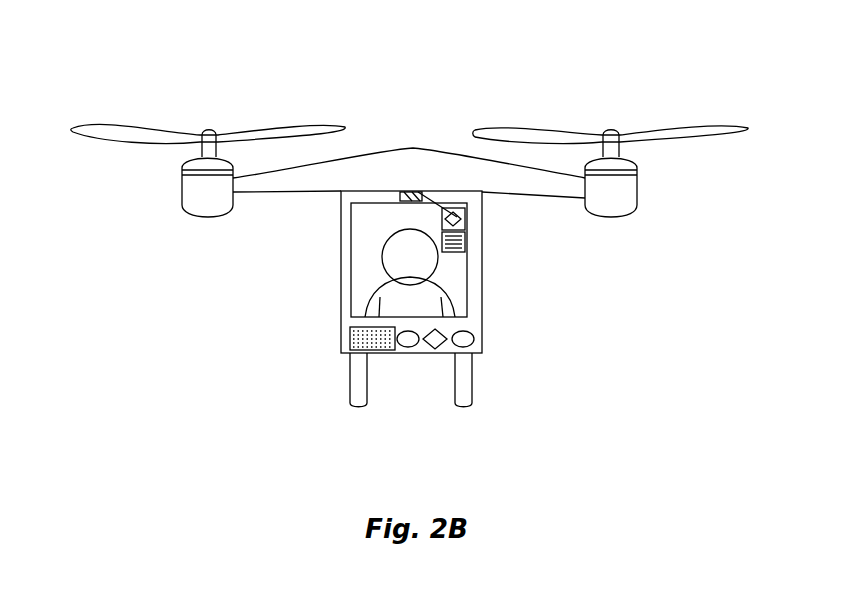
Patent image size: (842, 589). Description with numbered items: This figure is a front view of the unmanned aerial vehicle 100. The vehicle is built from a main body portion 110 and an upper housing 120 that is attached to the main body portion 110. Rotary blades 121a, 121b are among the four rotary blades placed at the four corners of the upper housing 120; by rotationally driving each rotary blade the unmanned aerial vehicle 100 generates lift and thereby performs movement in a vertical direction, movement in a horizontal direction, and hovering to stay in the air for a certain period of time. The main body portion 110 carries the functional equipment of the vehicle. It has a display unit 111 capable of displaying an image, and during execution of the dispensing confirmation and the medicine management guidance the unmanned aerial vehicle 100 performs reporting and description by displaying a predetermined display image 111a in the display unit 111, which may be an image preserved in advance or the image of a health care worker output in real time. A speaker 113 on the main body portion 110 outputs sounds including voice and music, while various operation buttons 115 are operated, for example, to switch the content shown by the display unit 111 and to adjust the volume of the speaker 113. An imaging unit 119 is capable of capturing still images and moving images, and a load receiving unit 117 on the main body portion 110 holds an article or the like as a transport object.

The unmanned aerial vehicle 100 is at (130, 29).
The main body portion 110 is at (345, 220).
The display unit 111 is at (358, 255).
The display image 111a is at (366, 288).
The speaker 113 is at (352, 340).
The operation buttons 115 is at (448, 352).
The load receiving unit 117 is at (462, 400).
The imaging unit 119 is at (457, 217).
The upper housing 120 is at (410, 157).
The rotary blade 121a is at (712, 126).
The rotary blade 121b is at (115, 128).